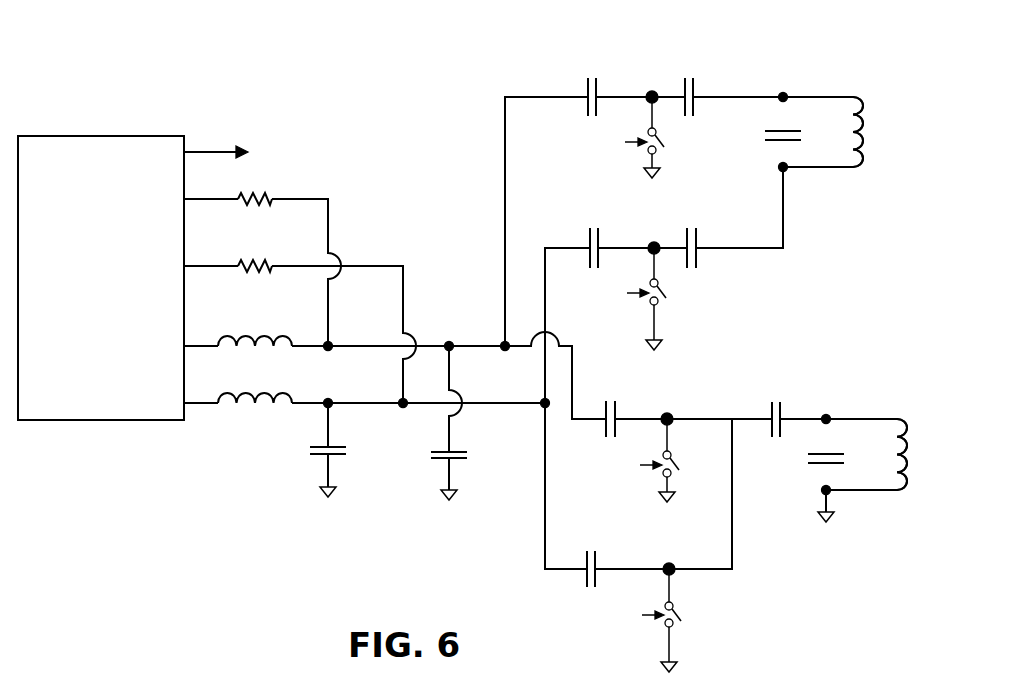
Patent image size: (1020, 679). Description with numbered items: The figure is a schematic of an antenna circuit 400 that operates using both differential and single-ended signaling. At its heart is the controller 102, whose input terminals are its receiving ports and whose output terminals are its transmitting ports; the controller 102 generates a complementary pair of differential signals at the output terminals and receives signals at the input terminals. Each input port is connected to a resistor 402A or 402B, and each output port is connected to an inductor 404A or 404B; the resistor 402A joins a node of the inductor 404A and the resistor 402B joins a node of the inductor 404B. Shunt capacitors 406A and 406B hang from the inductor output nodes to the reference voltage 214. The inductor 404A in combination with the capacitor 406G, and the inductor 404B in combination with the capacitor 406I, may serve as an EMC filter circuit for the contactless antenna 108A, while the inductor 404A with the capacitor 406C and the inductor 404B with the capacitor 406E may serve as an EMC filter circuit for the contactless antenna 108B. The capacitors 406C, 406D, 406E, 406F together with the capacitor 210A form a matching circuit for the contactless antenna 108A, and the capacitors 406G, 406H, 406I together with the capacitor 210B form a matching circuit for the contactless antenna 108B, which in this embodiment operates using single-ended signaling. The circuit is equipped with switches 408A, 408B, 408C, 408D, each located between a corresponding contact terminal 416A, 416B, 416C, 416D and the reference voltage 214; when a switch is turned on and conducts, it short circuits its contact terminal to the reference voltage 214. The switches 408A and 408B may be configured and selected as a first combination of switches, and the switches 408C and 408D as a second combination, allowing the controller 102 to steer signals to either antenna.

The antenna circuit 400 is at (182, 58).
The controller 102 is at (76, 422).
The resistor 402A is at (256, 188).
The resistor 402B is at (255, 256).
The inductor 404A is at (255, 335).
The inductor 404B is at (256, 393).
The capacitor 406A is at (442, 456).
The capacitor 406B is at (308, 456).
The capacitor 406C is at (585, 89).
The capacitor 406D is at (699, 92).
The capacitor 406E is at (587, 238).
The capacitor 406F is at (703, 242).
The capacitor 406G is at (606, 434).
The capacitor 406H is at (785, 414).
The capacitor 406I is at (585, 585).
The contact terminal 416A is at (648, 90).
The contact terminal 416B is at (650, 242).
The contact terminal 416C is at (663, 412).
The contact terminal 416D is at (665, 567).
The switch 408A is at (671, 156).
The switch 408B is at (666, 306).
The switch 408C is at (676, 486).
The switch 408D is at (684, 634).
The capacitor 210A is at (772, 140).
The capacitor 210B is at (816, 468).
The contactless antenna 108A is at (861, 167).
The contactless antenna 108B is at (894, 450).
The reference voltage 214 is at (646, 175).